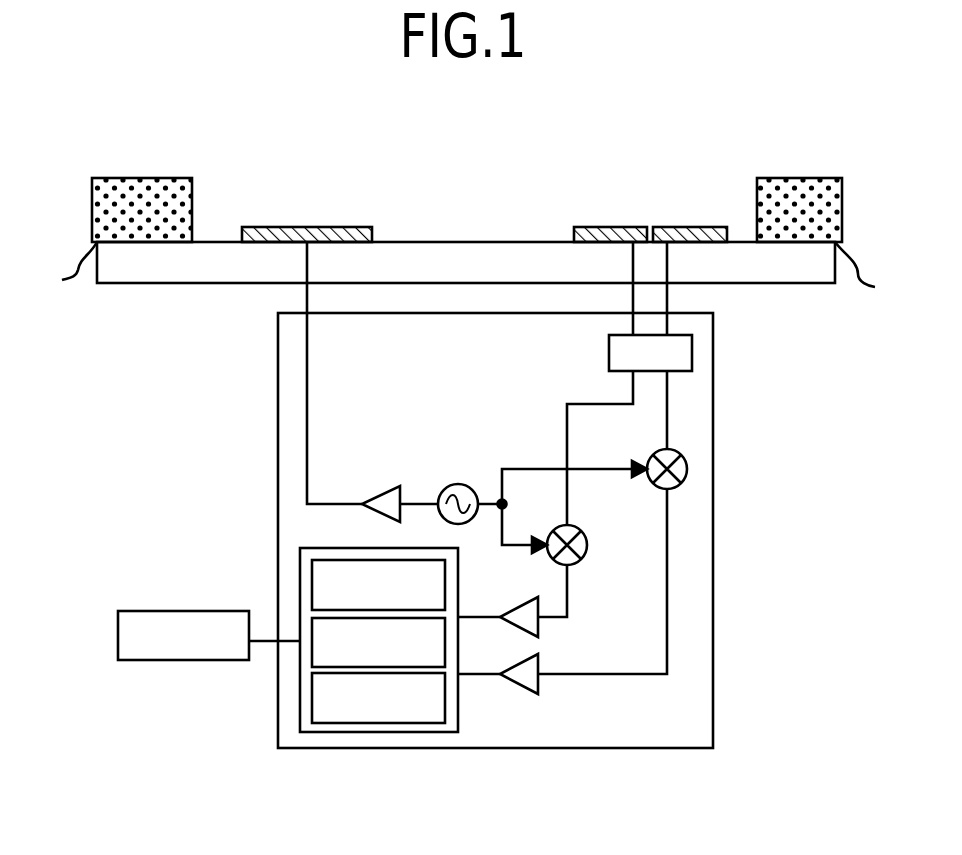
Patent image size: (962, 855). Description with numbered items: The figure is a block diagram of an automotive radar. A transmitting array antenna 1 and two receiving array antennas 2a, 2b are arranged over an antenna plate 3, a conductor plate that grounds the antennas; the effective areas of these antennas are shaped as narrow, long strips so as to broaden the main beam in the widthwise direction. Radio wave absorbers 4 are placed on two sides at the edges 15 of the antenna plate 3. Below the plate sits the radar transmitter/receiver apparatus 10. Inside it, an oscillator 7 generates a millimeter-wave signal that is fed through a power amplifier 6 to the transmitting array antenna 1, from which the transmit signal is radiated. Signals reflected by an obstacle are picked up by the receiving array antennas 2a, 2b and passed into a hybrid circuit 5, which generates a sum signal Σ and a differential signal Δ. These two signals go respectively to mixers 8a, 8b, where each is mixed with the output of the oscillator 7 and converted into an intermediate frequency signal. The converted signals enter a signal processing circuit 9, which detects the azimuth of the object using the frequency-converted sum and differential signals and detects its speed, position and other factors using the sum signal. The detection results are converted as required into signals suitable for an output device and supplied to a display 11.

The transmitting array antenna 1 is at (338, 227).
The receiving array antenna 2a is at (598, 227).
The receiving array antenna 2b is at (698, 227).
The antenna plate 3 is at (787, 284).
The radio wave absorber 4 is at (169, 178).
The hybrid circuit 5 is at (692, 350).
The power amplifier 6 is at (385, 488).
The oscillator 7 is at (464, 484).
The mixer 8a is at (586, 553).
The mixer 8b is at (687, 470).
The signal processing circuit 9 is at (403, 733).
The radar transmitter/receiver apparatus 10 is at (713, 697).
The display 11 is at (162, 610).
The edges 15 is at (467, 272).